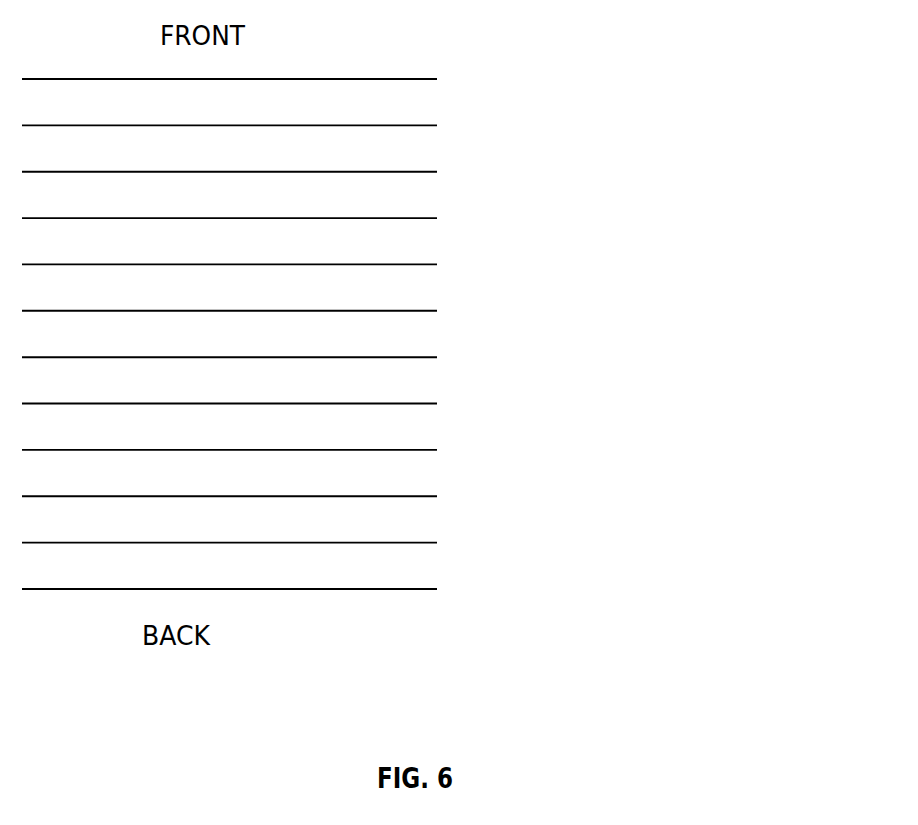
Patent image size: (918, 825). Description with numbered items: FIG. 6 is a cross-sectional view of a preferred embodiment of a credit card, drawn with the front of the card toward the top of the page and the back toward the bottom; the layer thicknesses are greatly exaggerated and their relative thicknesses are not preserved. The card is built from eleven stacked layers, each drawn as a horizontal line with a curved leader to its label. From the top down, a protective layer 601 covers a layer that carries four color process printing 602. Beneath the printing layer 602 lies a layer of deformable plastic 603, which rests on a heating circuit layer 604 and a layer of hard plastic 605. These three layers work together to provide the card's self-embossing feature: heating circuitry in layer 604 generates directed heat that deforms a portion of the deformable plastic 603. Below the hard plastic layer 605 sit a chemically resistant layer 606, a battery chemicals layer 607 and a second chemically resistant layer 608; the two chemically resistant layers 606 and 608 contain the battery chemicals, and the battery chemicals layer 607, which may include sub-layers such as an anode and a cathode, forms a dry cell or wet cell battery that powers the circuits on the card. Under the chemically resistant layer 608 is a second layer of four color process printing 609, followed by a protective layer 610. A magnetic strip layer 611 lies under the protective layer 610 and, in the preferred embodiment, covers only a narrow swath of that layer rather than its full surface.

The protective layer 601 is at (423, 100).
The four color process printing layer 602 is at (423, 146).
The deformable plastic layer 603 is at (423, 193).
The heating circuit layer 604 is at (423, 239).
The hard plastic layer 605 is at (423, 285).
The chemically resistant layer 606 is at (423, 332).
The battery chemicals layer 607 is at (423, 378).
The chemically resistant layer 608 is at (423, 424).
The four color process printing layer 609 is at (423, 471).
The protective layer 610 is at (423, 517).
The magnetic strip layer 611 is at (423, 564).